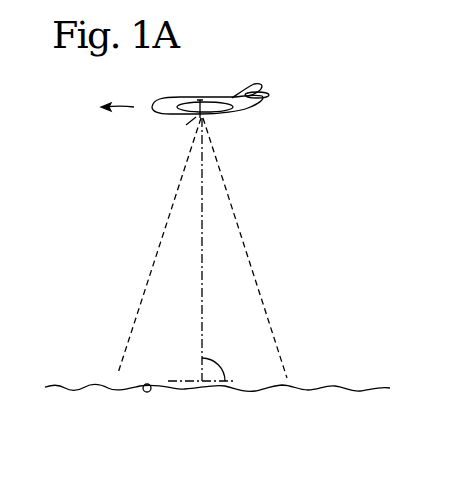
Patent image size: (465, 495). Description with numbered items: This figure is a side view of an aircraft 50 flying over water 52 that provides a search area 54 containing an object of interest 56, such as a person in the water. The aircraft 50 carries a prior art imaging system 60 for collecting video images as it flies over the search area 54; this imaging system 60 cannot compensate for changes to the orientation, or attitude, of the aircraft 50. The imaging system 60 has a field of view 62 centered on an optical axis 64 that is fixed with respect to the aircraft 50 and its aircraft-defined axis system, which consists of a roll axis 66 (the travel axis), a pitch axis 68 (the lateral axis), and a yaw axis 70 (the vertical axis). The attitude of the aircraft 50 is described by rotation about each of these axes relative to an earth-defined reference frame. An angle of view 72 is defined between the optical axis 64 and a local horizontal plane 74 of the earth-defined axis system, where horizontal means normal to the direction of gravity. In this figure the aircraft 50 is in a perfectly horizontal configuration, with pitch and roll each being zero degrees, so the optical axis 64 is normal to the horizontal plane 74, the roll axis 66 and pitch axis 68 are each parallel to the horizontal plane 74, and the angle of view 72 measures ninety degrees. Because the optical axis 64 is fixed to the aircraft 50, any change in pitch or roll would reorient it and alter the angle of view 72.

The aircraft 50 is at (178, 89).
The water 52 is at (85, 386).
The search area 54 is at (313, 355).
The object of interest 56 is at (144, 389).
The imaging system 60 is at (192, 121).
The field of view 62 is at (160, 243).
The optical axis 64 is at (204, 263).
The roll axis 66 is at (132, 109).
The pitch axis 68 is at (203, 102).
The yaw axis 70 is at (205, 144).
The angle of view 72 is at (209, 358).
The horizontal plane 74 is at (178, 381).